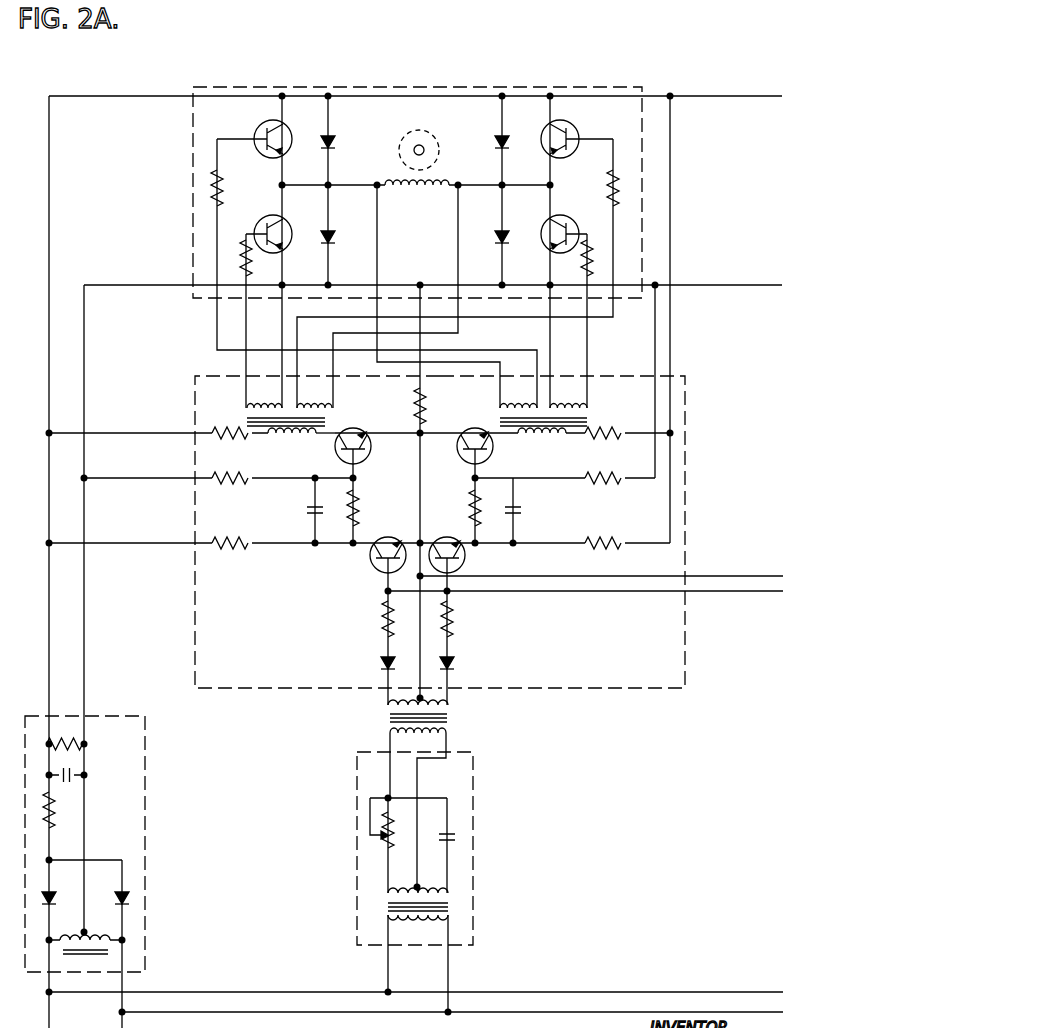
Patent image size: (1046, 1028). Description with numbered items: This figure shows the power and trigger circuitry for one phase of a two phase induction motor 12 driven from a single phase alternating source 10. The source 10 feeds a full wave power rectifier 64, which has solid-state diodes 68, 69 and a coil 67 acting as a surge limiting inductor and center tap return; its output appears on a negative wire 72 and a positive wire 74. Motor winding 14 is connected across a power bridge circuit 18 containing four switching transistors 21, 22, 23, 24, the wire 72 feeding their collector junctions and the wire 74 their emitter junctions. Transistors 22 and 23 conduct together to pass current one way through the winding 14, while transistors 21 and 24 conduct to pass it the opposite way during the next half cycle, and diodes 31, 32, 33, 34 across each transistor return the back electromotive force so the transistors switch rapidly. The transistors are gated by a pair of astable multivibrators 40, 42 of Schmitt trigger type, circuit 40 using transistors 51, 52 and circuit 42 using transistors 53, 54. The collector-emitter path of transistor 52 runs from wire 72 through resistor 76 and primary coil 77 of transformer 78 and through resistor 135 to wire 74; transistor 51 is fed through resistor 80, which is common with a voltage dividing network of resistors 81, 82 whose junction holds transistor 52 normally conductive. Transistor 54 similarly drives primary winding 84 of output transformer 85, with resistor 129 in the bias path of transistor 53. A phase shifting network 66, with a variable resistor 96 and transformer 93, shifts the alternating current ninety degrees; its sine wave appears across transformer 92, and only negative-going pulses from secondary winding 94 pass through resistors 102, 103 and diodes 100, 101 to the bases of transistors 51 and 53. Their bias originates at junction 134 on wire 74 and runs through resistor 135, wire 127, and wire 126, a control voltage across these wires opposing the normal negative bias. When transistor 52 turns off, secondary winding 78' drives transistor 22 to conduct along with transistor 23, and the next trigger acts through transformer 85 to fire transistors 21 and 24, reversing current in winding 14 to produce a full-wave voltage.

The source of alternating single phase power 10 is at (120, 1023).
The two phase induction motor 12 is at (402, 142).
The motor winding 14 is at (420, 191).
The power bridge circuit 18 is at (250, 87).
The switching transistor 21 is at (256, 130).
The switching transistor 22 is at (262, 224).
The switching transistor 23 is at (584, 112).
The switching transistor 24 is at (573, 213).
The diode 31 is at (333, 140).
The diode 32 is at (333, 233).
The diode 33 is at (506, 141).
The diode 34 is at (503, 236).
The astable multivibrator 40 is at (195, 397).
The astable multivibrator 42 is at (684, 420).
The transistor 51 is at (394, 546).
The transistor 52 is at (370, 449).
The transistor 53 is at (446, 546).
The transistor 54 is at (464, 448).
The full wave power rectifier 64 is at (107, 716).
The phase shifting network 66 is at (380, 752).
The coil 67 is at (92, 938).
The diode 68 is at (118, 895).
The diode 69 is at (50, 895).
The negative wire 72 is at (143, 96).
The positive wire 74 is at (140, 285).
The resistor 76 is at (236, 437).
The primary coil 77 is at (290, 442).
The transformer 78 is at (267, 414).
The secondary winding 78' is at (289, 395).
The resistor 80 is at (250, 532).
The resistor 81 is at (360, 516).
The resistor 82 is at (240, 483).
The primary winding 84 is at (570, 438).
The output transformer 85 is at (586, 420).
The transformer 92 is at (448, 716).
The transformer 93 is at (450, 907).
The secondary winding 94 is at (388, 705).
The variable resistor 96 is at (412, 844).
The diode 100 is at (383, 663).
The diode 101 is at (453, 664).
The resistor 102 is at (384, 621).
The resistor 103 is at (452, 624).
The wire 126 is at (738, 592).
The wire 127 is at (742, 576).
The resistor 129 is at (616, 530).
The junction 134 is at (418, 284).
The resistor 135 is at (416, 410).